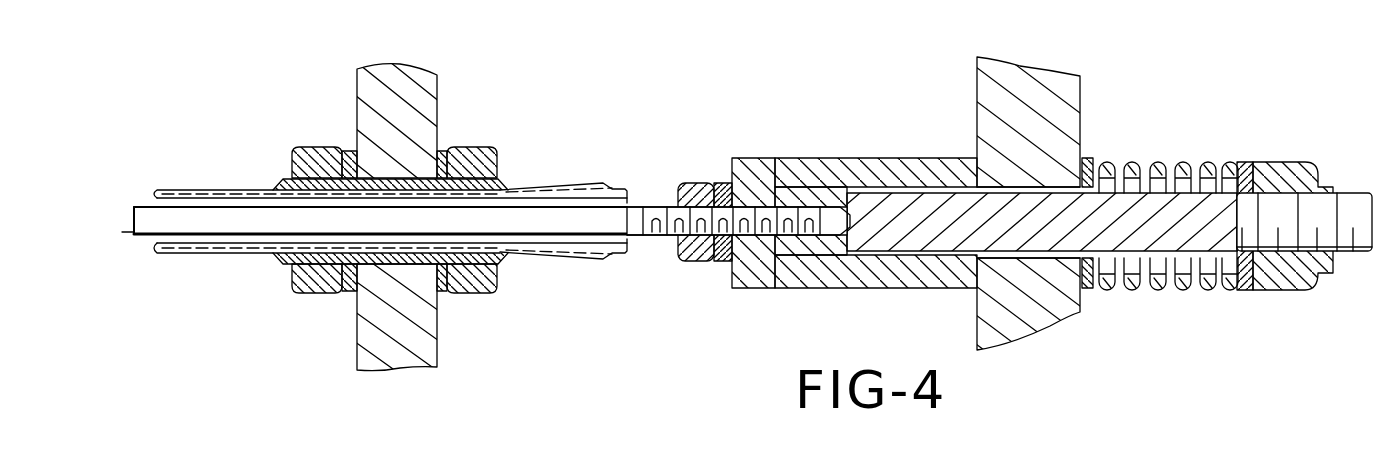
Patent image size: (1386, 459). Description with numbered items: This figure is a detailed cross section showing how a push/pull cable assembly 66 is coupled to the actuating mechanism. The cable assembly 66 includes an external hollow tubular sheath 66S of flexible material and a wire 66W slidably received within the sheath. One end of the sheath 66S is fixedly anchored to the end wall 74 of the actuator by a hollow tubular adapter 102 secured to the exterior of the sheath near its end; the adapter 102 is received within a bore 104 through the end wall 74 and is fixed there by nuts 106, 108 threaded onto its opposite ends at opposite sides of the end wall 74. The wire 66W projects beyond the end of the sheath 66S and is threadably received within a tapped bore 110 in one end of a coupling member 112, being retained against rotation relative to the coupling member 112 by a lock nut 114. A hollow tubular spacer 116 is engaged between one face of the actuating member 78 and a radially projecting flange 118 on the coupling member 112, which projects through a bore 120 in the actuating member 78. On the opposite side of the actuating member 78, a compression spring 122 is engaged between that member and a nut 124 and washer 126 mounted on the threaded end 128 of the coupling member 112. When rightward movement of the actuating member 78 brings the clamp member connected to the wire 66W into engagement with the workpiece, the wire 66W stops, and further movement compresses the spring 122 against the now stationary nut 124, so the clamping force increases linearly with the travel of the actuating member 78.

The push/pull cable assembly 66 is at (373, 138).
The wire 66W is at (134, 222).
The sheath 66S is at (200, 189).
The end wall 74 is at (426, 82).
The actuating member 78 is at (1070, 107).
The hollow tubular adapter 102 is at (292, 265).
The bore 104 is at (388, 178).
The nut 106 is at (316, 284).
The nut 108 is at (453, 289).
The tapped bore 110 is at (770, 232).
The coupling member 112 is at (843, 196).
The lock nut 114 is at (688, 262).
The hollow tubular spacer 116 is at (903, 157).
The radially projecting flange 118 is at (752, 170).
The bore 120 is at (1004, 200).
The compression spring 122 is at (1134, 163).
The nut 124 is at (1280, 162).
The washer 126 is at (1239, 162).
The threaded end 128 is at (1357, 256).